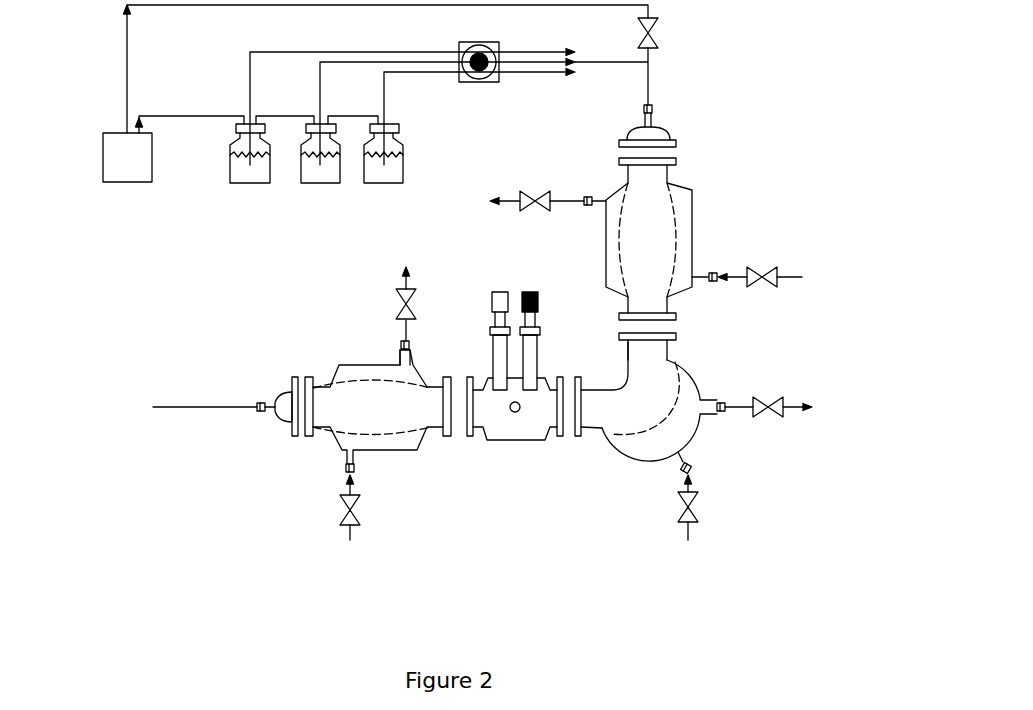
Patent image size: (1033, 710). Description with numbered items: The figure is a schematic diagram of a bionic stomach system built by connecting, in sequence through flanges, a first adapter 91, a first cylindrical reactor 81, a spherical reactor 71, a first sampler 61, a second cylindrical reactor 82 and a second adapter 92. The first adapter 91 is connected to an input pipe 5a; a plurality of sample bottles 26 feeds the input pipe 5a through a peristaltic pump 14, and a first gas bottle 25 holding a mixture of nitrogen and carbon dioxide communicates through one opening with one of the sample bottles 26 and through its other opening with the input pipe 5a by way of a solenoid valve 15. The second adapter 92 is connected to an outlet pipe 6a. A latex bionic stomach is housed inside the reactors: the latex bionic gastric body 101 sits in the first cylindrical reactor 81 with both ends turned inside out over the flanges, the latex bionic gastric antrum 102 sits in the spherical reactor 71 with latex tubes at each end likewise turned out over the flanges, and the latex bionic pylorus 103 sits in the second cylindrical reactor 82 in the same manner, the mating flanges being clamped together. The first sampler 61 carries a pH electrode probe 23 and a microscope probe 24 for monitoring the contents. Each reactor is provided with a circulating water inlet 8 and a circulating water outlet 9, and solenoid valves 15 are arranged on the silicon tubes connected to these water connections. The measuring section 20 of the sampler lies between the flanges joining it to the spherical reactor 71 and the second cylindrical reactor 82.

The input pipe 5a is at (650, 75).
The outlet pipe 6a is at (198, 407).
The circulating water inlet 8 is at (700, 280).
The circulating water outlet 9 is at (595, 200).
The peristaltic pump 14 is at (492, 78).
The solenoid valve 15 is at (662, 30).
The measuring section 20 is at (511, 412).
The pH electrode probe 23 is at (500, 292).
The microscope probe 24 is at (530, 292).
The first gas bottle 25 is at (118, 158).
The sample bottles 26 is at (213, 183).
The first sampler 61 is at (530, 430).
The spherical reactor 71 is at (633, 448).
The first cylindrical reactor 81 is at (692, 197).
The second cylindrical reactor 82 is at (403, 450).
The first adapter 91 is at (660, 130).
The second adapter 92 is at (280, 420).
The latex bionic gastric body 101 is at (653, 237).
The latex bionic gastric antrum 102 is at (700, 370).
The latex bionic pylorus 103 is at (370, 417).